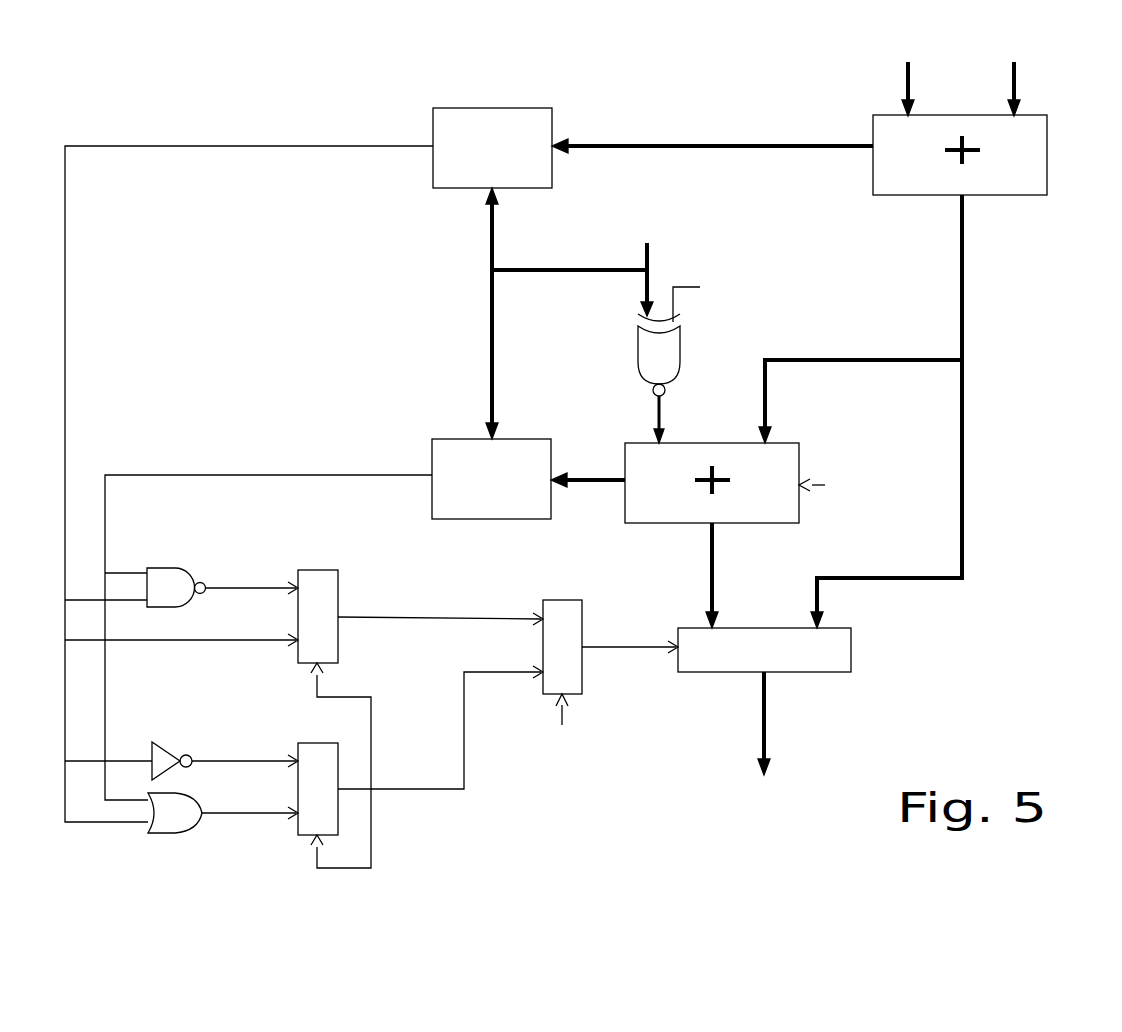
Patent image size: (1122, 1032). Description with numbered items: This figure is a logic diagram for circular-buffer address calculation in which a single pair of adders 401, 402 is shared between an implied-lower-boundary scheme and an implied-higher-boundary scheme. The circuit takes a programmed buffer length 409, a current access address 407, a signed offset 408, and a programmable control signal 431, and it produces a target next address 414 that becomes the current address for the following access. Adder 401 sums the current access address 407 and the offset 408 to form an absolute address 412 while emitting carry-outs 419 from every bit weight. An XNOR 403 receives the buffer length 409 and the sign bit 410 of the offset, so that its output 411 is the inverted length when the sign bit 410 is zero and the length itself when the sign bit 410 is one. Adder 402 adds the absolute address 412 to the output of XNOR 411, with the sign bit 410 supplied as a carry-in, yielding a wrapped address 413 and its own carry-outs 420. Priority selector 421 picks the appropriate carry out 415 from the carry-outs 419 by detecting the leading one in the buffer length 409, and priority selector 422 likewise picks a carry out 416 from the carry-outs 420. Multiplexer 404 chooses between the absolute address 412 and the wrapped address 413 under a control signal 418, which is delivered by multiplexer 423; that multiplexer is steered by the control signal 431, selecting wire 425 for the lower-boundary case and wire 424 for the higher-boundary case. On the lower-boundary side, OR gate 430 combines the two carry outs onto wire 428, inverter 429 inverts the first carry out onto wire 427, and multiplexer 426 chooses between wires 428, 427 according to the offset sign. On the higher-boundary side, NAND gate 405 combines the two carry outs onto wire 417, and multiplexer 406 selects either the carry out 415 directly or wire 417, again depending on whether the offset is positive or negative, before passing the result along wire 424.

The adder 401 is at (989, 177).
The adder 402 is at (712, 459).
The XNOR 403 is at (629, 355).
The multiplexer 404 is at (764, 626).
The NAND gate 405 is at (135, 562).
The multiplexer 406 is at (208, 591).
The current access address 407 is at (884, 76).
The offset 408 is at (992, 73).
The buffer length 409 is at (572, 263).
The sign bit 410 is at (644, 586).
The output of XNOR 411 is at (634, 419).
The absolute address 412 is at (860, 411).
The wrapped address 413 is at (688, 575).
The target next address 414 is at (745, 723).
The carry out 415 is at (248, 484).
The carry out 416 is at (268, 614).
The wire 417 is at (252, 567).
The control signal 418 is at (630, 625).
The carry-outs 419 is at (712, 128).
The carry-outs 420 is at (588, 458).
The priority selector 421 is at (492, 123).
The priority selector 422 is at (488, 454).
The multiplexer 423 is at (561, 623).
The wire 424 is at (440, 598).
The wire 425 is at (440, 720).
The multiplexer 426 is at (327, 765).
The wire 427 is at (245, 739).
The wire 428 is at (250, 840).
The inverter 429 is at (137, 731).
The OR gate 430 is at (168, 843).
The programmable control signal 431 is at (600, 718).